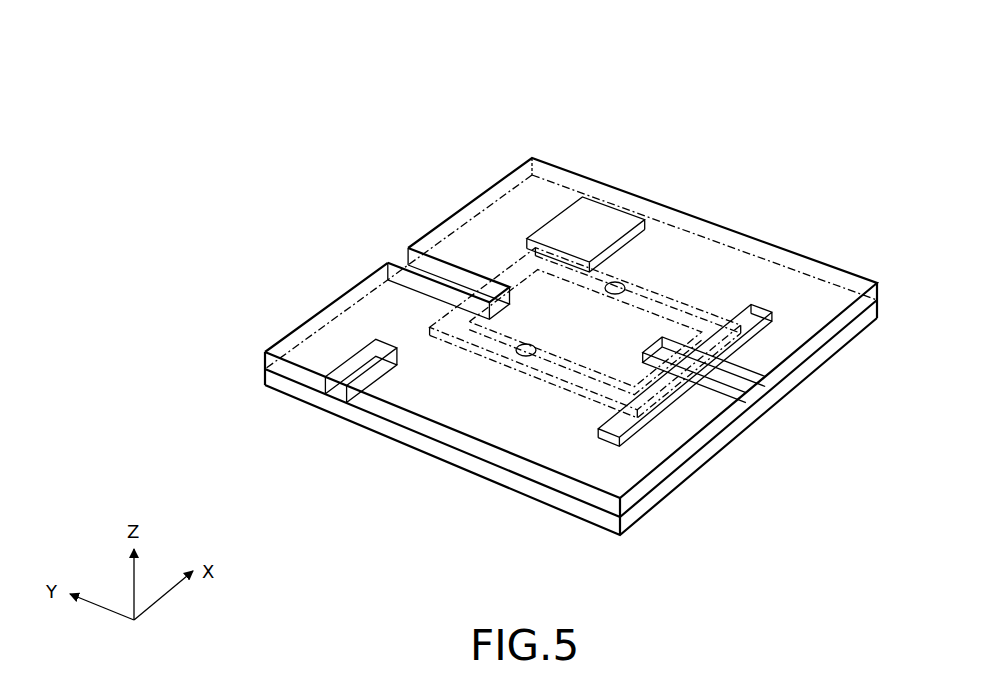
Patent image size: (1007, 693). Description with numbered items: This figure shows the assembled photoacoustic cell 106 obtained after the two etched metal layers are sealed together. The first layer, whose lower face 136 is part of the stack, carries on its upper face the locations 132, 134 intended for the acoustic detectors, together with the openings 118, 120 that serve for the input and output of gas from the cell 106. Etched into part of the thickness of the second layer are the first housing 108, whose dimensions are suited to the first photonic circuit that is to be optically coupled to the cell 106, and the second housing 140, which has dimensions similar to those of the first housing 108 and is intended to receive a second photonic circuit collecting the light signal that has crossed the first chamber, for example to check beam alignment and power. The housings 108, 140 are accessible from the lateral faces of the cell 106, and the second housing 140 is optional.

The cell 106 is at (596, 136).
The first housing 108 is at (352, 407).
The opening 118 is at (520, 357).
The opening 120 is at (624, 287).
The location 132 is at (425, 272).
The location 134 is at (746, 386).
The lower face 136 is at (826, 249).
The second housing 140 is at (598, 218).